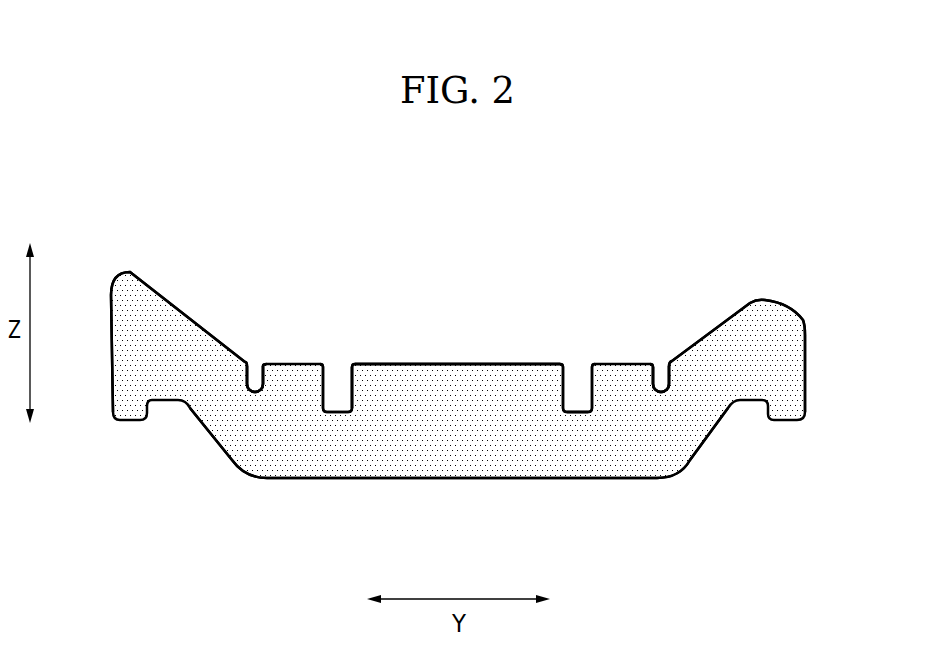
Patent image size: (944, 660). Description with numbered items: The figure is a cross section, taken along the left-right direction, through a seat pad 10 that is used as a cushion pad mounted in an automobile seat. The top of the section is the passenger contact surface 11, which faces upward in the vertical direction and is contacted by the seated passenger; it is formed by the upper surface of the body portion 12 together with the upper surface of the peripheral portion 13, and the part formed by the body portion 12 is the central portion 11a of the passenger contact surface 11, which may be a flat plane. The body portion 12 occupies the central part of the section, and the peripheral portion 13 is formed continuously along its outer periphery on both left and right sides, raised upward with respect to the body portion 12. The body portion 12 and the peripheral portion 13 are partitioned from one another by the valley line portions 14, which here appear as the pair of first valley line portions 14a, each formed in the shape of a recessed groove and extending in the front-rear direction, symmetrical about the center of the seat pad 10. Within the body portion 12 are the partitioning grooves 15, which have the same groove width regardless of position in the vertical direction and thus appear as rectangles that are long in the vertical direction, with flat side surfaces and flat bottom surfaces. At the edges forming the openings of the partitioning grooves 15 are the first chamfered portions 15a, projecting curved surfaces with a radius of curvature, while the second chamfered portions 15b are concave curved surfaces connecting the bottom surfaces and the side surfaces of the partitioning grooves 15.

The seat pad 10 is at (711, 172).
The passenger contact surface 11 is at (457, 364).
The top surface 11a is at (457, 321).
The body portion 12 is at (455, 453).
The peripheral portion 13 is at (127, 293).
The valley line portions 14 is at (460, 335).
The first valley line portions 14a is at (255, 383).
The partitioning grooves 15 is at (343, 390).
The first chamfered portions 15a is at (350, 388).
The second chamfered portions 15b is at (584, 408).